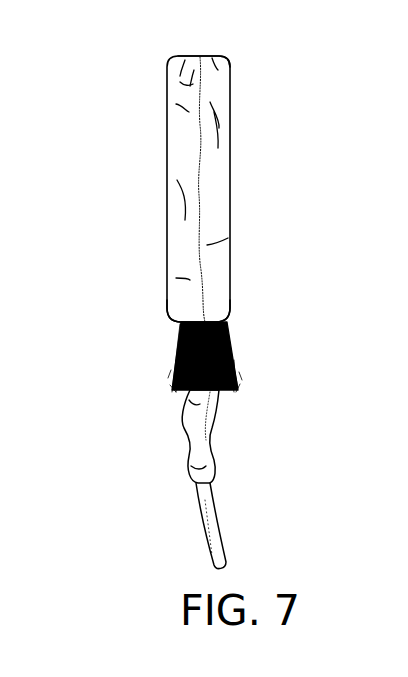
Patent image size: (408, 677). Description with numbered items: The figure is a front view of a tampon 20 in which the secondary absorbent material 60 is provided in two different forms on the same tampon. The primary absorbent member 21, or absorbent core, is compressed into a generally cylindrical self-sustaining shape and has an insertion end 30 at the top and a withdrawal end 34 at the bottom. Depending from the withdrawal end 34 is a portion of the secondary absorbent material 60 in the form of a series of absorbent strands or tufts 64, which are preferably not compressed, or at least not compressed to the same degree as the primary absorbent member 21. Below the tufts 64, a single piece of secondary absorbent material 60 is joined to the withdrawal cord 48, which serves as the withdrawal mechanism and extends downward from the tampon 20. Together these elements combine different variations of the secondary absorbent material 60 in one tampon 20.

The tampon 20 is at (118, 52).
The primary absorbent member 21 is at (230, 138).
The insertion end 30 is at (217, 58).
The withdrawal end 34 is at (233, 316).
The absorbent strands or tufts 64 is at (174, 373).
The secondary absorbent material 60 is at (183, 424).
The withdrawal cord 48 is at (213, 503).